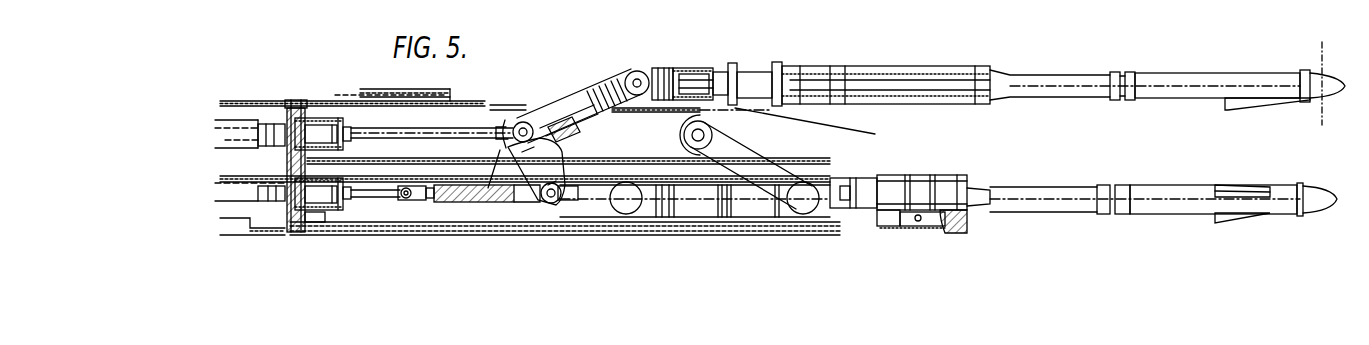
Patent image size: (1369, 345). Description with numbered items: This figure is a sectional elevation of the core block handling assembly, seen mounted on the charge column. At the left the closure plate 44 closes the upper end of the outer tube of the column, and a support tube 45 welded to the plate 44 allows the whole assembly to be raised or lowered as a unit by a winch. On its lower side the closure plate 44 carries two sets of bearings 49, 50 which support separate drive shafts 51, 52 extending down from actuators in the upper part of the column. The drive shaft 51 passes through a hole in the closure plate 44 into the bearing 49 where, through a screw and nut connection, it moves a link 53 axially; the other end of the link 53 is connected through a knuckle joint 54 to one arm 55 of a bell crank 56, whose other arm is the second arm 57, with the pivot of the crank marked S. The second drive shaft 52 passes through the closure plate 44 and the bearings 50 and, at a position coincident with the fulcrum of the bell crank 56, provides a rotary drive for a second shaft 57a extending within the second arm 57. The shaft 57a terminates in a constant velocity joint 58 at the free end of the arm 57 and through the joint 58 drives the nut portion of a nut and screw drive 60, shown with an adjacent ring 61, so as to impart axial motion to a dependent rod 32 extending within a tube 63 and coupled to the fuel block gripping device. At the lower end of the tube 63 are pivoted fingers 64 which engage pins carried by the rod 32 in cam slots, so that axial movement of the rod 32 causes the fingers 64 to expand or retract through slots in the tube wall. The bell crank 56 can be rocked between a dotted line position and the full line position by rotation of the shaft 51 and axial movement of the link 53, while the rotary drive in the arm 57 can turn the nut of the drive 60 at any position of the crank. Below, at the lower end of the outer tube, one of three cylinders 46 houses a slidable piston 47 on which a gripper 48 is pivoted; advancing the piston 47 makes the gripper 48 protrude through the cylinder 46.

The support tube 45 is at (244, 102).
The closure plate 44 is at (290, 108).
The bearings 50 is at (320, 120).
The second drive shaft 52 is at (262, 134).
The drive shaft 51 is at (272, 206).
The bearings 49 is at (320, 197).
The link 53 is at (448, 200).
The pivot joint S is at (516, 106).
The second arm 57 is at (598, 116).
The second shaft 57a is at (580, 130).
The arm 55 is at (568, 182).
The knuckle joint 54 is at (553, 204).
The bell crank 56 is at (574, 198).
The constant velocity joint 58 is at (642, 70).
The nut and screw drive 60 is at (702, 52).
The ring flange 61 is at (732, 65).
The dependent rod 32 is at (940, 82).
The tube 63 is at (1147, 73).
The fingers 64 is at (1240, 110).
The piston 47 is at (885, 226).
The cylinder 46 is at (900, 226).
The gripper 48 is at (952, 226).